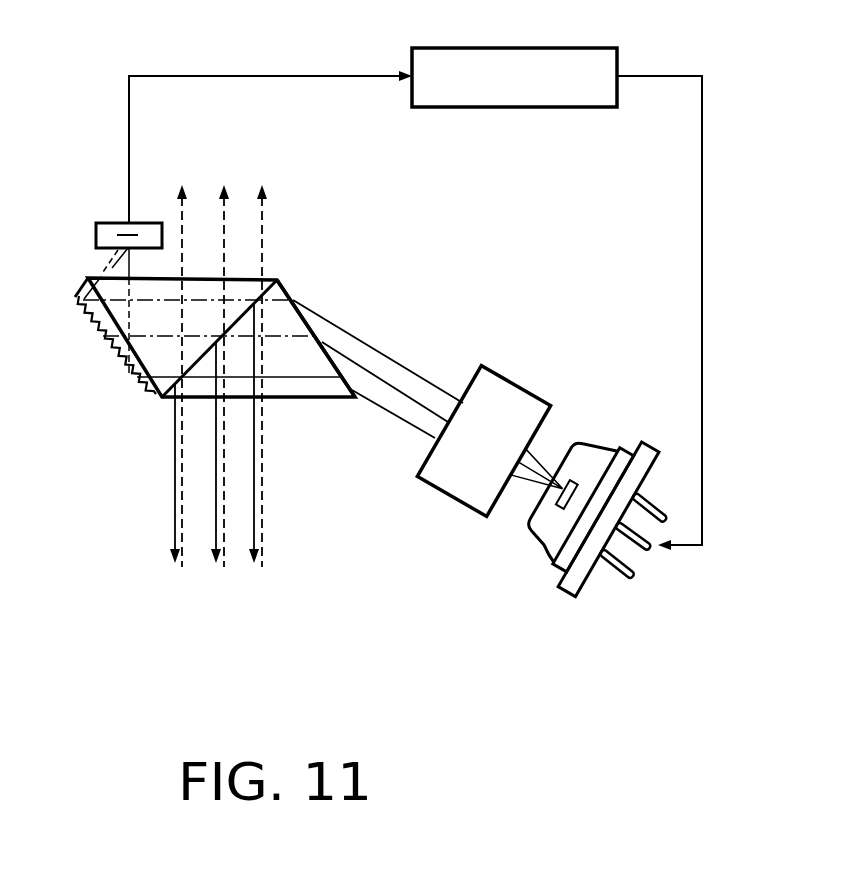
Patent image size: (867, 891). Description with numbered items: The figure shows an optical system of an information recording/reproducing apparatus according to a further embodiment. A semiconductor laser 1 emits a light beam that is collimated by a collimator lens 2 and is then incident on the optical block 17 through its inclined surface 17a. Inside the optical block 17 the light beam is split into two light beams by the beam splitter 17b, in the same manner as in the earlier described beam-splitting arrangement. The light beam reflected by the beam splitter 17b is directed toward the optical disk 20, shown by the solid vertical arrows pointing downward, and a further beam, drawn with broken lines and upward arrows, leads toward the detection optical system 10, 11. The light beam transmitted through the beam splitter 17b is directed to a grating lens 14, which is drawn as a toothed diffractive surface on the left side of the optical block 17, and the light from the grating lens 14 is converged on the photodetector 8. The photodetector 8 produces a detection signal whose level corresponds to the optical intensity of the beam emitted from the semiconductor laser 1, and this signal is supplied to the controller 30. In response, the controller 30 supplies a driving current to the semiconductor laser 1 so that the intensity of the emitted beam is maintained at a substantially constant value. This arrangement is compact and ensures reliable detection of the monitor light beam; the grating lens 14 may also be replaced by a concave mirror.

The semiconductor laser 1 is at (657, 441).
The collimator lens 2 is at (513, 378).
The photodetector 8 is at (113, 222).
The detection optical system 10 is at (252, 332).
The detection optical system 11 is at (252, 332).
The grating lens 14 is at (93, 322).
The optical block 17 is at (273, 353).
The first surface of optical block 17a is at (292, 297).
The beam splitter 17b is at (170, 398).
The optical disk 20 is at (215, 470).
The controller 30 is at (478, 48).